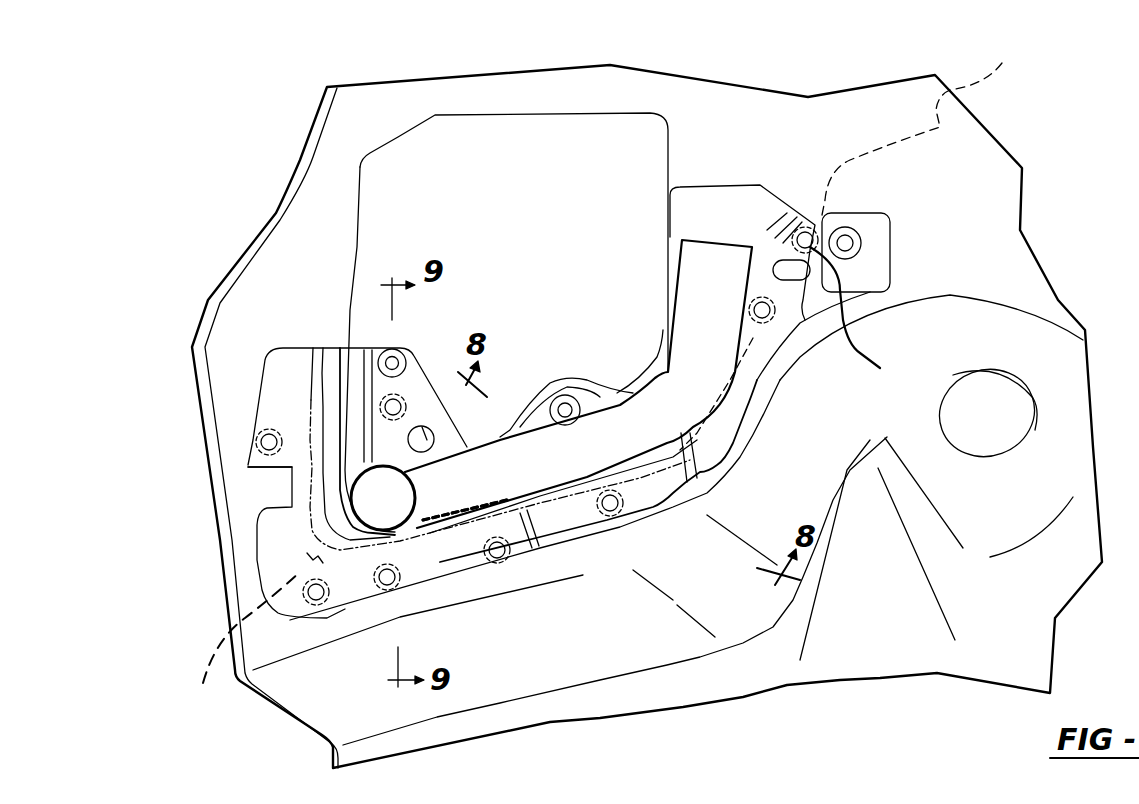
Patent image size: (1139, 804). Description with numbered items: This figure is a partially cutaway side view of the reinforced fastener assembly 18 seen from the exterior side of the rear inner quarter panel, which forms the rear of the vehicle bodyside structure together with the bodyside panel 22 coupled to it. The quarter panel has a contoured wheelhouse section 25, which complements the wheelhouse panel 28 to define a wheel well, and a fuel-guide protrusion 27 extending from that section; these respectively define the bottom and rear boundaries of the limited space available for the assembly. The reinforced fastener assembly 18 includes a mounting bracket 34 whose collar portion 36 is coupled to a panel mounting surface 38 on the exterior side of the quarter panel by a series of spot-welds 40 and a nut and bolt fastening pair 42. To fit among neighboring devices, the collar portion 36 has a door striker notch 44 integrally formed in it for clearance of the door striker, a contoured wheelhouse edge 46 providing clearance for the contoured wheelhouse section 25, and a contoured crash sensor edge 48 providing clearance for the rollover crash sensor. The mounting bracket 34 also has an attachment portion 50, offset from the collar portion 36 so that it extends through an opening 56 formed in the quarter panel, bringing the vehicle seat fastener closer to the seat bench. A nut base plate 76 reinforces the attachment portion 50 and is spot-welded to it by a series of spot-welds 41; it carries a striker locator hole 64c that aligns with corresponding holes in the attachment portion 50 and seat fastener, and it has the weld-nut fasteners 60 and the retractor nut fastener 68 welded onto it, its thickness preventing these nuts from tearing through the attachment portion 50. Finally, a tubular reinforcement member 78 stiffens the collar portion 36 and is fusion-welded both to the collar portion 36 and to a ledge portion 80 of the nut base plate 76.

The reinforced fastener assembly 18 is at (240, 387).
The bodyside panel 22 is at (277, 213).
The contoured wheelhouse section 25 is at (566, 644).
The fuel-guide protrusion 27 is at (1047, 363).
The wheelhouse panel 28 is at (930, 133).
The mounting bracket 34 is at (263, 350).
The collar portion 36 is at (296, 561).
The panel mounting surface 38 is at (244, 642).
The spot-welds 40 is at (260, 435).
The spot-welds 41 is at (402, 398).
The nut and bolt fastening pair 42 is at (857, 227).
The door striker notch 44 is at (280, 467).
The contoured wheelhouse edge 46 is at (760, 382).
The contoured crash sensor edge 48 is at (717, 183).
The attachment portion 50 is at (517, 380).
The opening 56 is at (357, 255).
The weld-nut fasteners 60 is at (397, 348).
The striker locator hole 64c is at (434, 438).
The retractor nut fastener 68 is at (563, 387).
The nut base plate 76 is at (338, 416).
The tubular reinforcement member 78 is at (653, 370).
The ledge portion 80 is at (433, 523).